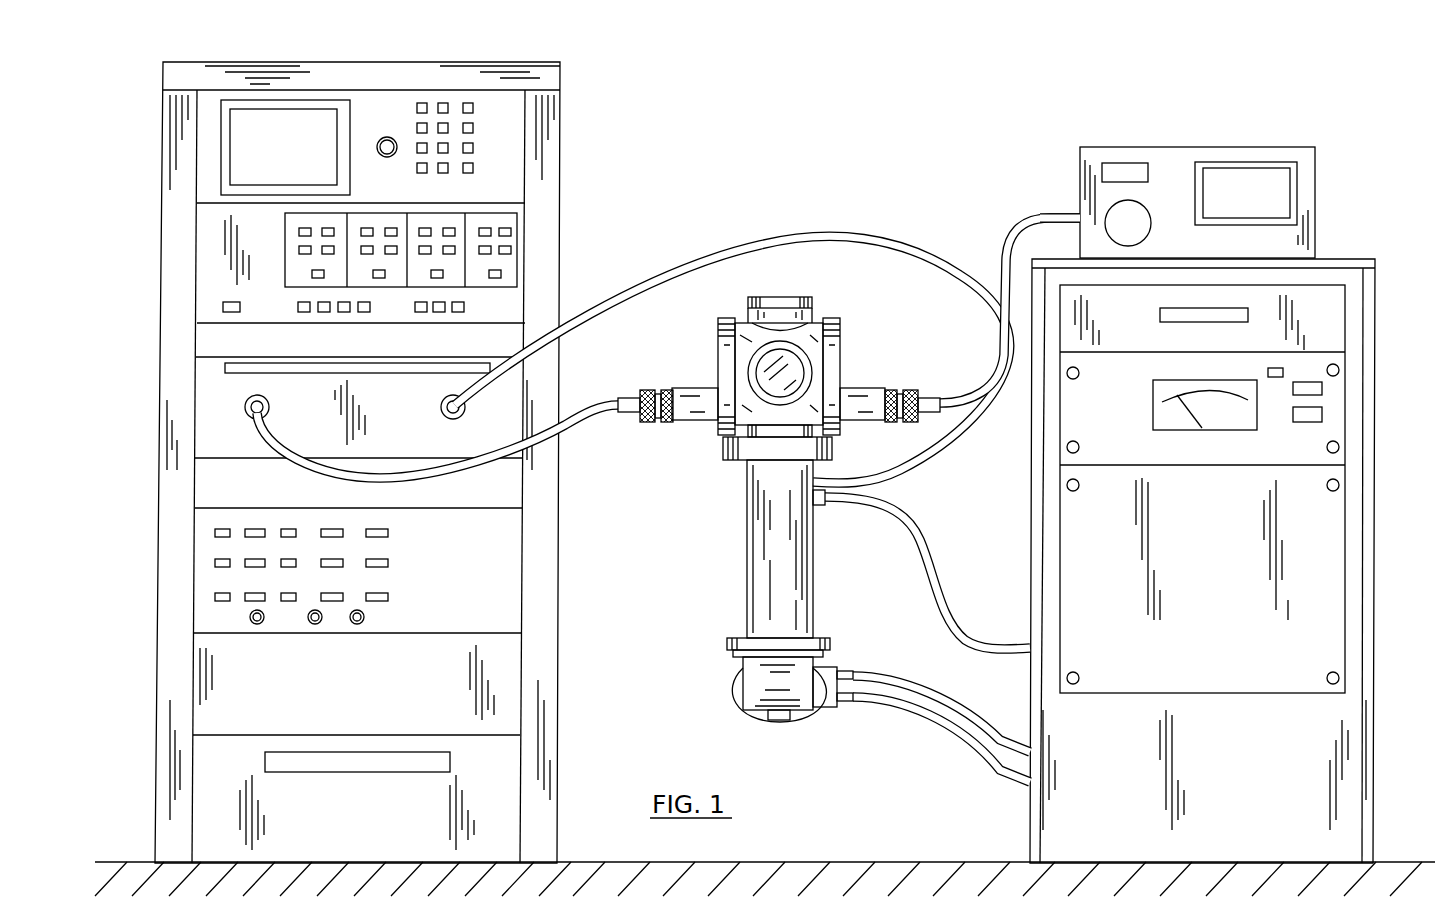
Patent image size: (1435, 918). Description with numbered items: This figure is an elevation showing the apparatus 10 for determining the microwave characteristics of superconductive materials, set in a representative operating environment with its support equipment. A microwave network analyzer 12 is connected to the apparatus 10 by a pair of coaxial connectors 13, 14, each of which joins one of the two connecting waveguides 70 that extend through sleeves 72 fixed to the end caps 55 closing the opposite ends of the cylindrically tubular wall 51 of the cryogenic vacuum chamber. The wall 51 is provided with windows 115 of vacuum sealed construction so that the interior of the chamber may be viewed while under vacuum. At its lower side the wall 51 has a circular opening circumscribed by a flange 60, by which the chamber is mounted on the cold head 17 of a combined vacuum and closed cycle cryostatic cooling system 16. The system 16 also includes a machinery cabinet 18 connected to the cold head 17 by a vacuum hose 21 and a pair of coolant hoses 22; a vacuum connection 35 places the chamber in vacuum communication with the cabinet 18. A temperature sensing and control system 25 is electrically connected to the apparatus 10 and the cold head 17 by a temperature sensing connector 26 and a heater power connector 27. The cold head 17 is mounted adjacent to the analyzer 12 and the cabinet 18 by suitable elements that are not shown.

The apparatus 10 is at (768, 376).
The microwave network analyzer 12 is at (575, 140).
The coaxial connector 13 is at (716, 252).
The coaxial connector 14 is at (570, 405).
The combined vacuum and closed cycle cryostatic cooling system 16 is at (857, 716).
The cold head 17 is at (762, 567).
The machinery cabinet 18 is at (1382, 550).
The vacuum hose 21 is at (953, 632).
The coolant hoses 22 is at (957, 712).
The temperature sensing and control system 25 is at (1058, 152).
The temperature sensing connector 26 is at (1033, 211).
The heater power connector 27 is at (1022, 232).
The vacuum connection 35 is at (818, 506).
The cylindrically tubular wall 51 is at (748, 337).
The end plate or cap 55 is at (810, 413).
The flange 60 is at (728, 450).
The connecting waveguide 70 is at (645, 418).
The sleeve 72 is at (698, 392).
The window 115 is at (795, 362).